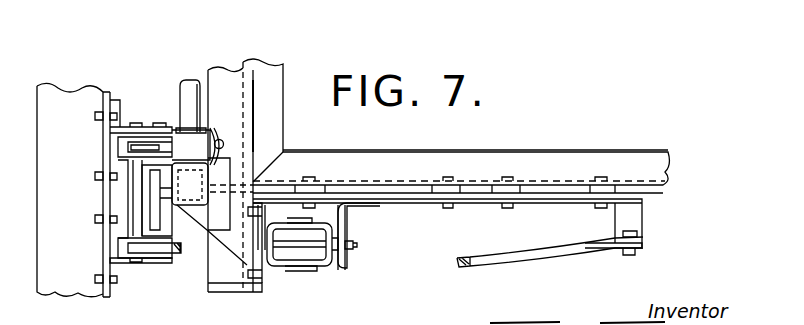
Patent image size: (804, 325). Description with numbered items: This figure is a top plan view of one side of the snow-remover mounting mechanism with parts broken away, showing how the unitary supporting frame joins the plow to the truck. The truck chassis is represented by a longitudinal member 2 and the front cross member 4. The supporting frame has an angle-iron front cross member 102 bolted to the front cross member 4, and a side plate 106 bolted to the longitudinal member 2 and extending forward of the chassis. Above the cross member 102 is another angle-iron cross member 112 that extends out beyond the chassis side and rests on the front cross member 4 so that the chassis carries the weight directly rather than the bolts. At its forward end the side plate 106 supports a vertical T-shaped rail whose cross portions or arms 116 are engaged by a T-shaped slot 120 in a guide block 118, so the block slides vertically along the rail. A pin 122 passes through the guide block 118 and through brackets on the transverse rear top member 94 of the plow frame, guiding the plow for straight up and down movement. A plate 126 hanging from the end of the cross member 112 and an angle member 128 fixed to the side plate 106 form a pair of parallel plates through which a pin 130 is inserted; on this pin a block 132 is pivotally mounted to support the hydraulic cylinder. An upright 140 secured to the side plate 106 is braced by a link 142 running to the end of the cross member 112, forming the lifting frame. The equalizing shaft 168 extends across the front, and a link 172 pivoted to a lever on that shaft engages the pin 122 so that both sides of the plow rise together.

The longitudinal members 2 is at (505, 152).
The front cross member 4 is at (270, 73).
The transverse rear top member 94 is at (72, 100).
The front cross member 102 is at (232, 72).
The side plates 106 is at (578, 199).
The cross member 112 is at (237, 123).
The cross portions or arms 116 is at (152, 212).
The guide blocks 118 is at (127, 203).
The T-shaped slots 120 is at (150, 190).
The pins 122 is at (135, 264).
The plates 126 is at (258, 276).
The angle members 128 is at (343, 227).
The pins 130 is at (354, 247).
The blocks 132 is at (302, 267).
The uprights 140 is at (636, 237).
The links 142 is at (555, 252).
The shaft 168 is at (190, 90).
The links 172 is at (147, 140).